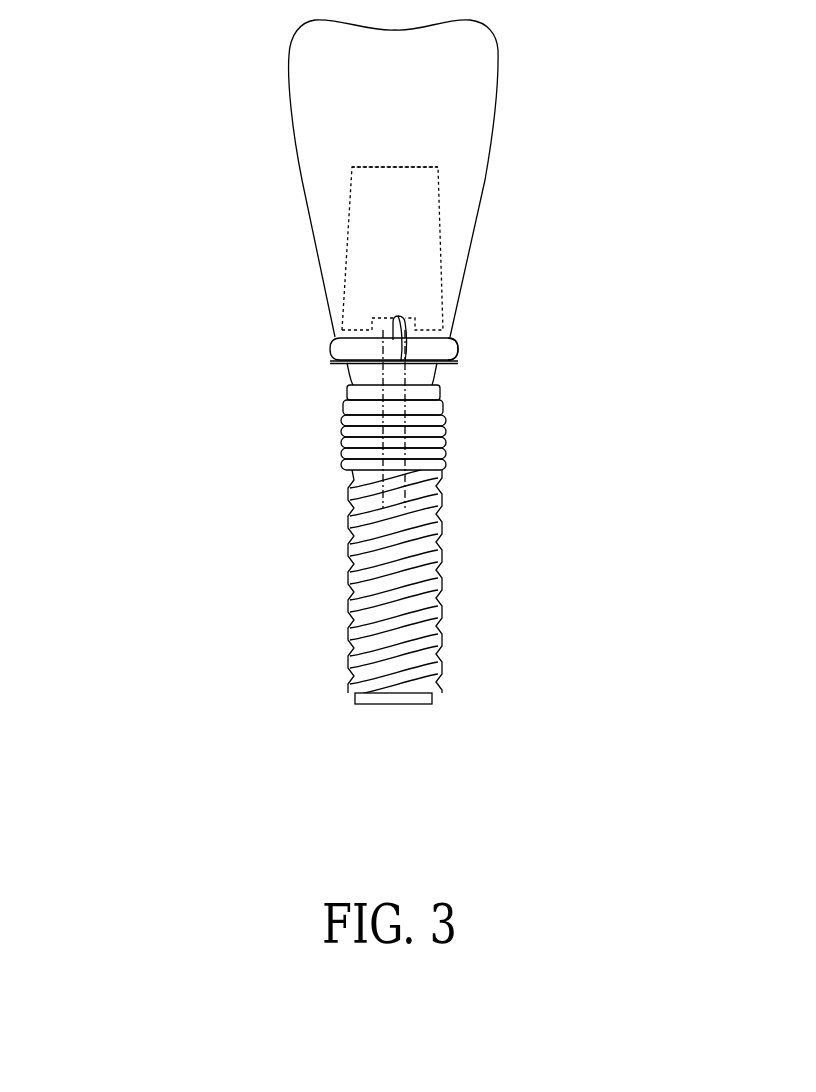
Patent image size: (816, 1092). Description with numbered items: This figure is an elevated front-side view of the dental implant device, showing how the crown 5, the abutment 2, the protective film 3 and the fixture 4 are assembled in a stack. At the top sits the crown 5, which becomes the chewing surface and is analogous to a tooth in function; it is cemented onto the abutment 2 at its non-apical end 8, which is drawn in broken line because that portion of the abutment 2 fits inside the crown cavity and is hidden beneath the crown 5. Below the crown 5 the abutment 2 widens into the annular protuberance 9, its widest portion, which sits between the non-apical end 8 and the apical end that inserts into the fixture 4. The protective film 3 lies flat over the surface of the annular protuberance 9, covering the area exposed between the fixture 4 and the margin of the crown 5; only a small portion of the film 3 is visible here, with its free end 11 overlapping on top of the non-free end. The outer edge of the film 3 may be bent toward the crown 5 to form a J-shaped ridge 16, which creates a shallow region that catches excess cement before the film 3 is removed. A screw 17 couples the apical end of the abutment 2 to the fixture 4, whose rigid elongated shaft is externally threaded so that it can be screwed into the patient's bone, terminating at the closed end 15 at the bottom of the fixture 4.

The crown 5 is at (450, 83).
The non-apical end 8 is at (370, 165).
The abutment 2 is at (402, 248).
The free end 11 is at (398, 317).
The protective film 3 is at (352, 343).
The annular protuberance 9 is at (457, 353).
The J-shaped ridge 16 is at (457, 367).
The screw 17 is at (388, 412).
The fixture 4 is at (420, 625).
The closed end 15 is at (370, 703).